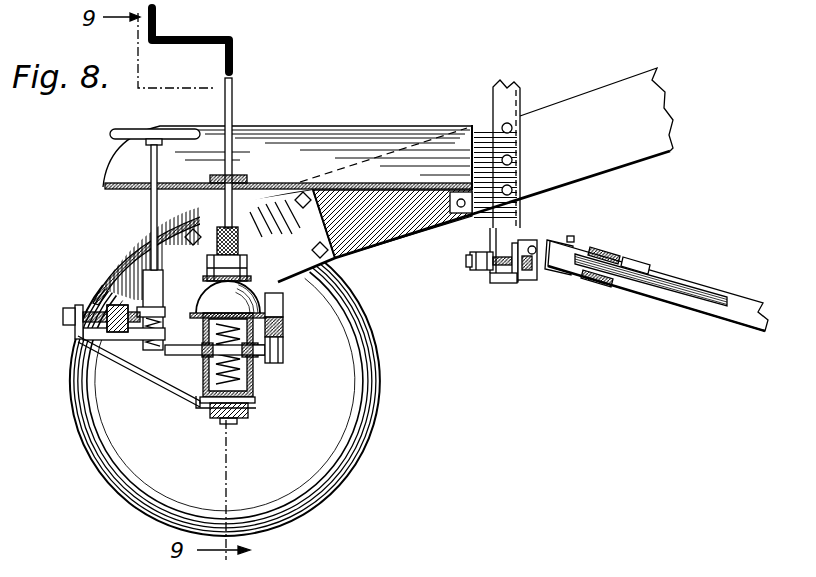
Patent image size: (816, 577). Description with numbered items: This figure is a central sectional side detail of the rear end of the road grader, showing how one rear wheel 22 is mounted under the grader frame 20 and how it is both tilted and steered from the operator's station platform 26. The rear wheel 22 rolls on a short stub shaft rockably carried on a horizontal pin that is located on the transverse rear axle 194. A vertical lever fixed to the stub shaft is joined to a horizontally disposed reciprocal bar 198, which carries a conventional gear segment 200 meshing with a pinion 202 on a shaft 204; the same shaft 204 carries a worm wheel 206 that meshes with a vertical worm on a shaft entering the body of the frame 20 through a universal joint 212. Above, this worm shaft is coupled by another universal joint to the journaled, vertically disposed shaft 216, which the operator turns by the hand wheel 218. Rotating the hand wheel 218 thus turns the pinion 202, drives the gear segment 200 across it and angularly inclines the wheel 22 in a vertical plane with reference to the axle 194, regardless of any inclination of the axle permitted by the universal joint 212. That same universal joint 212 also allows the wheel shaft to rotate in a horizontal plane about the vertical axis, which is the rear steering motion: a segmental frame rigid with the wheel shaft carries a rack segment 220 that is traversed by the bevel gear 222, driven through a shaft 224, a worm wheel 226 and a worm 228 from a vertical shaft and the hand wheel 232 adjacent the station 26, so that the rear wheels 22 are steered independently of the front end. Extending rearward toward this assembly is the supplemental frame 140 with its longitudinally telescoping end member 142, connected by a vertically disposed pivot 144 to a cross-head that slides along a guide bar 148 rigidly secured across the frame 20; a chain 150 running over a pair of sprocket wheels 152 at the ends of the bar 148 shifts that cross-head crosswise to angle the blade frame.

The grader frame 20 is at (612, 98).
The rear wheels 22 is at (337, 413).
The operator's station platform 26 is at (122, 170).
The supplemental frame 140 is at (753, 300).
The telescoping end member 142 is at (697, 285).
The vertical pivot 144 is at (567, 240).
The guide bar 148 is at (531, 246).
The chain 150 is at (470, 264).
The sprocket wheels 152 is at (478, 254).
The rear axle 194 is at (200, 402).
The reciprocal bar 198 is at (280, 308).
The gear segment 200 is at (274, 328).
The pinion 202 is at (284, 355).
The shaft 204 is at (260, 360).
The worm wheel 206 is at (248, 393).
The universal joint 212 is at (250, 282).
The vertically disposed shaft 216 is at (160, 13).
The hand wheel 218 is at (120, 333).
The rack segment 220 is at (97, 330).
The bevel gear 222 is at (97, 298).
The shaft 224 is at (63, 316).
The worm wheel 226 is at (153, 372).
The worm 228 is at (128, 338).
The hand wheel 232 is at (138, 134).